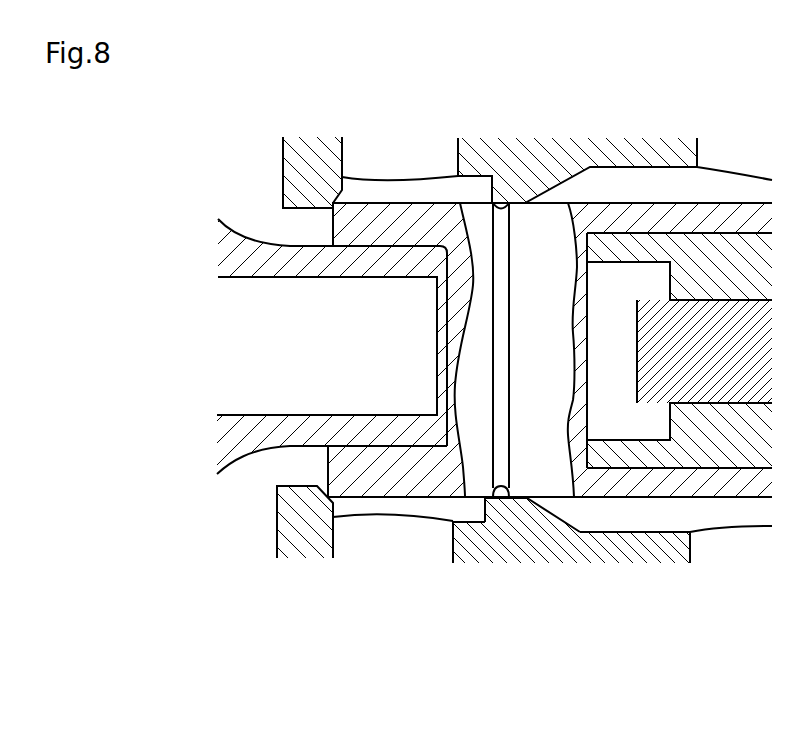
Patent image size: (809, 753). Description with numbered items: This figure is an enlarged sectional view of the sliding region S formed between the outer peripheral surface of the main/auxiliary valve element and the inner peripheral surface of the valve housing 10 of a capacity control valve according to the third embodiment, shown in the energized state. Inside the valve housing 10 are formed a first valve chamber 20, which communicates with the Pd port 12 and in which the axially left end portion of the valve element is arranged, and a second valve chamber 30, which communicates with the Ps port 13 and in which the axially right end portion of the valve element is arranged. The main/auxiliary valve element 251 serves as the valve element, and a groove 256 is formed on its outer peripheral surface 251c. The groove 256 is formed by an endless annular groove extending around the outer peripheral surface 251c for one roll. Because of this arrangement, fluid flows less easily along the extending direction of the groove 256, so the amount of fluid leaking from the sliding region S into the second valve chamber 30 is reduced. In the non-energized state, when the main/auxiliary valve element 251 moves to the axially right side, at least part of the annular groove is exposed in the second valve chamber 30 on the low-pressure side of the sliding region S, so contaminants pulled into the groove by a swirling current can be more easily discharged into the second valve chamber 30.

The valve housing 10 is at (280, 177).
The Pd port 12 is at (450, 148).
The Ps port 13 is at (698, 167).
The first valve chamber 20 is at (438, 192).
The second valve chamber 30 is at (636, 190).
The groove 256 is at (505, 247).
The main/auxiliary valve element 251 is at (755, 508).
The outer peripheral surface 251c is at (600, 500).
The sliding region S is at (518, 491).